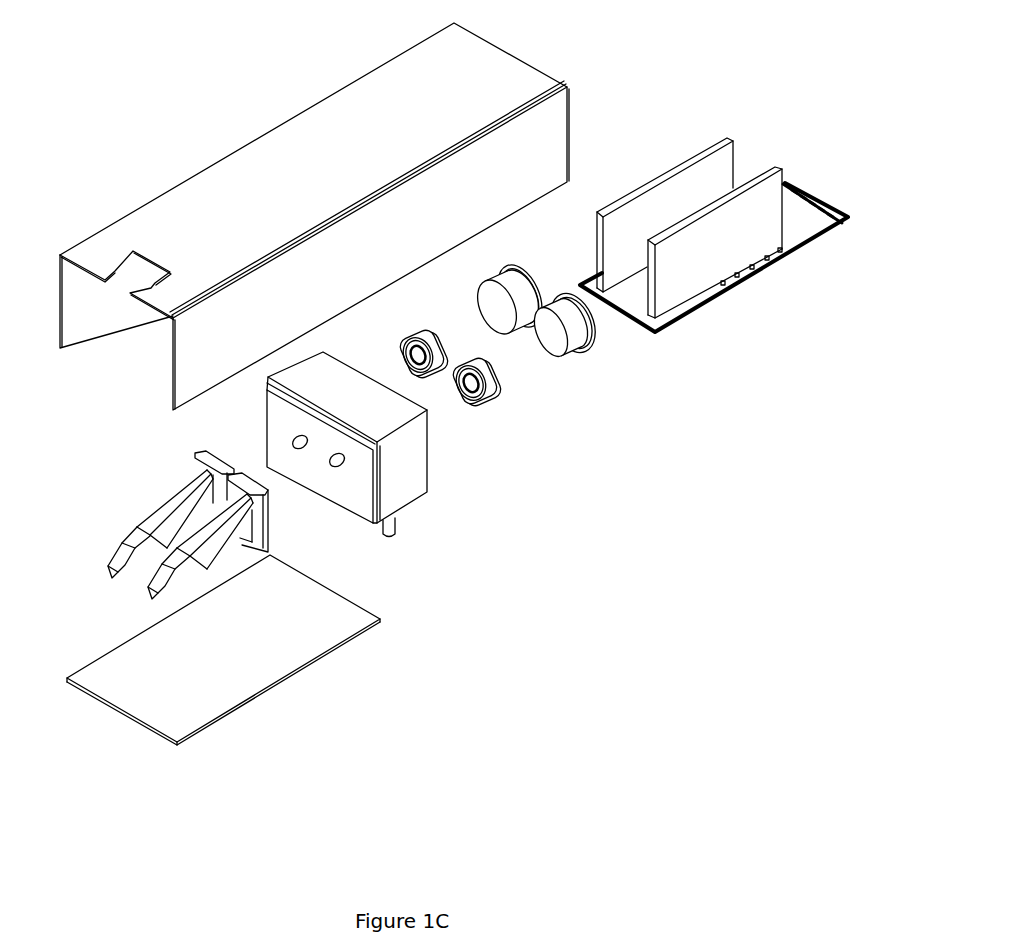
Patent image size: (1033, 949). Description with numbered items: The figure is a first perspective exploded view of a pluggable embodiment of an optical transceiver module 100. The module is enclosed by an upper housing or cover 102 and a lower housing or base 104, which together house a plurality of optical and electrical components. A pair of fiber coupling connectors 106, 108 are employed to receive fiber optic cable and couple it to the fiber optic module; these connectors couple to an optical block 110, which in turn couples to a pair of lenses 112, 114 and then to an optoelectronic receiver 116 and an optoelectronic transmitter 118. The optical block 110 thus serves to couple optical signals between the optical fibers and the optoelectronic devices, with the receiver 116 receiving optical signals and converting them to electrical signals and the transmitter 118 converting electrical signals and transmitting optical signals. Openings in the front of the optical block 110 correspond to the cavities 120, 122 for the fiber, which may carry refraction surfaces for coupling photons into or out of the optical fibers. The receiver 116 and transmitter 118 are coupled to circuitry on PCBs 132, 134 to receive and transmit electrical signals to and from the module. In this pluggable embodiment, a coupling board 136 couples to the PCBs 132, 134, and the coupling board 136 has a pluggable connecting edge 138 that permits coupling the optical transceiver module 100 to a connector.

The optical transceiver module 100 is at (562, 607).
The upper housing or cover 102 is at (502, 50).
The lower housing or base 104 is at (360, 633).
The fiber coupling connector 106 is at (127, 555).
The fiber coupling connector 108 is at (160, 577).
The optical block 110 is at (387, 461).
The lens 112 is at (430, 377).
The lens 114 is at (490, 400).
The optoelectronic receiver 116 is at (505, 333).
The optoelectronic transmitter 118 is at (575, 355).
The cavity 120 is at (298, 448).
The cavity 122 is at (340, 466).
The PCB 132 is at (727, 138).
The PCB 134 is at (782, 167).
The coupling board 136 is at (688, 312).
The pluggable connecting edge 138 is at (820, 195).